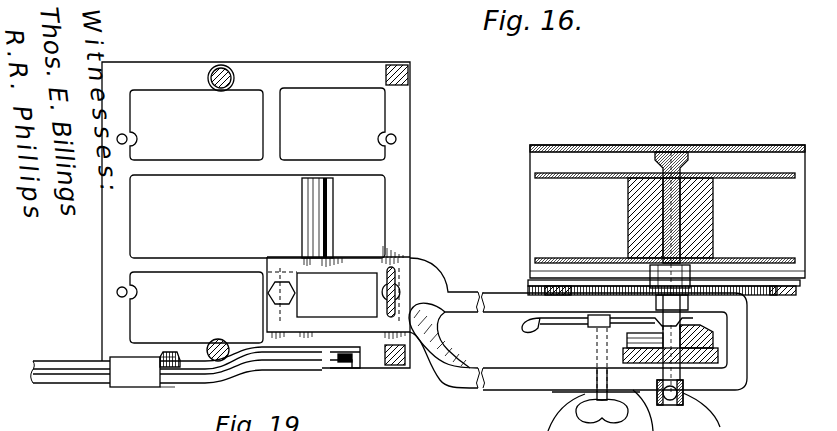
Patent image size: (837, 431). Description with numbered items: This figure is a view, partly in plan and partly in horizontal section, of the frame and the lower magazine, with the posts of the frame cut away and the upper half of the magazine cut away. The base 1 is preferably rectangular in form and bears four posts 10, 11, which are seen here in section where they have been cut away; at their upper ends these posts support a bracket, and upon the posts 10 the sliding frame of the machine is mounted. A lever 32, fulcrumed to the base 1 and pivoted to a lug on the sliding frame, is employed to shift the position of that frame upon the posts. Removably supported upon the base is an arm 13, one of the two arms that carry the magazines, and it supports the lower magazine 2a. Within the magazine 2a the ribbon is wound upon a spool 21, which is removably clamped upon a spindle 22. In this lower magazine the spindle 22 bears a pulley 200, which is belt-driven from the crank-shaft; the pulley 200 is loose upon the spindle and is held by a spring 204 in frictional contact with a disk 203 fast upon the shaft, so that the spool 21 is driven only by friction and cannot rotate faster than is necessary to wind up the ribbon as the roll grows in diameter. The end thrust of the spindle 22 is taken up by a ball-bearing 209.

The base 1 is at (130, 218).
The posts 10 is at (222, 65).
The posts 11 is at (410, 75).
The lever 32 is at (130, 388).
The arm 13 is at (498, 392).
The magazine 2a is at (666, 220).
The spool 21 is at (772, 180).
The spindle 22 is at (688, 213).
The pulley 200 is at (713, 333).
The disk 203 is at (722, 359).
The spring 204 is at (556, 326).
The ball-bearing 209 is at (685, 395).